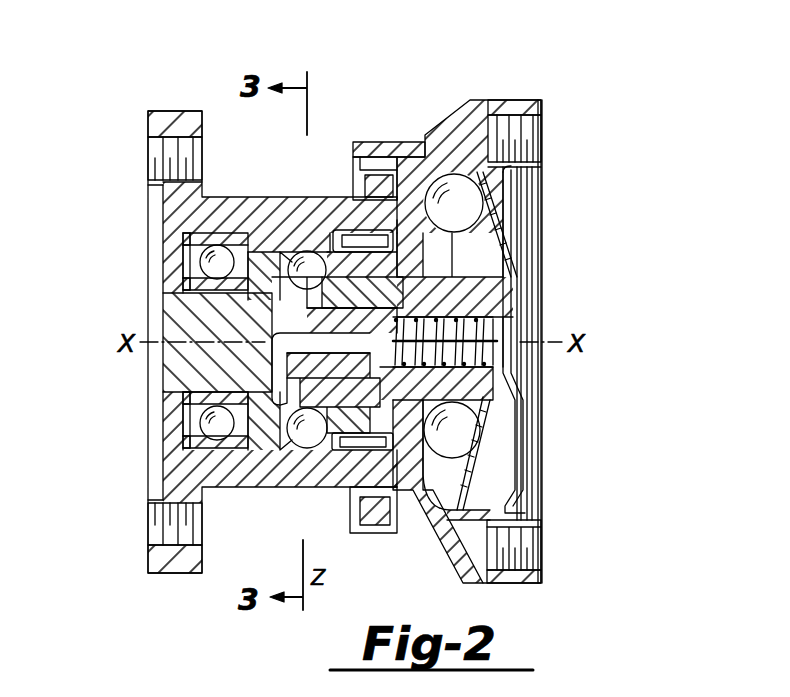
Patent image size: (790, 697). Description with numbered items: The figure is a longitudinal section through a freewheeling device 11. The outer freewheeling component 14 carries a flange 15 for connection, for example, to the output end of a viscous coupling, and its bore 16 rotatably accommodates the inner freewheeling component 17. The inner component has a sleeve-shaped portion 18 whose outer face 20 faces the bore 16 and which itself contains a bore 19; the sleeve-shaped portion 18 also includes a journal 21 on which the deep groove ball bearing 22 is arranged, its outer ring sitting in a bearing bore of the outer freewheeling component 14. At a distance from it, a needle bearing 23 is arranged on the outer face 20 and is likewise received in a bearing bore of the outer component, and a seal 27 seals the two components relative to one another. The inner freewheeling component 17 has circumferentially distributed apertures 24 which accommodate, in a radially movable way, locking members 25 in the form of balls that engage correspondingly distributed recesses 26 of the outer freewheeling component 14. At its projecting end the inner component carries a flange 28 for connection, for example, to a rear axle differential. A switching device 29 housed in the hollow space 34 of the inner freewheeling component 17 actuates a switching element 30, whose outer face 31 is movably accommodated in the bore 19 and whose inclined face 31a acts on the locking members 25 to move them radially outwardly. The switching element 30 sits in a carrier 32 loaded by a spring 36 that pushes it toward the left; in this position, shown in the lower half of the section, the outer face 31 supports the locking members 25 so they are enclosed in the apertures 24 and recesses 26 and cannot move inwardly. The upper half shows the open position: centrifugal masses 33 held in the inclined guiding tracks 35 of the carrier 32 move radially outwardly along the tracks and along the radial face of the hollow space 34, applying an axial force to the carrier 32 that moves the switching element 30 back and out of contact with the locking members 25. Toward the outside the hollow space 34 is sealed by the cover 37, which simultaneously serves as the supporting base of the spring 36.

The freewheeling device 11 is at (427, 101).
The outer freewheeling component 14 is at (210, 212).
The flange 15 is at (172, 130).
The bore 16 is at (245, 458).
The inner freewheeling component 17 is at (487, 100).
The sleeve-shaped portion 18 is at (393, 263).
The bore 19 is at (413, 527).
The outer face 20 is at (272, 262).
The journal 21 is at (195, 330).
The bearing 22 is at (183, 287).
The needle bearing 23 is at (363, 240).
The apertures 24 is at (312, 250).
The locking members 25 is at (183, 262).
The recesses 26 is at (290, 448).
The seal 27 is at (395, 145).
The flange 28 is at (517, 110).
The switching device 29 is at (524, 222).
The switching element 30 is at (372, 510).
The outer face 31 is at (312, 450).
The inclined face 31a is at (262, 455).
The carrier 32 is at (500, 293).
The centrifugal masses 33 is at (483, 198).
The hollow space 34 is at (478, 500).
The guiding tracks 35 is at (520, 256).
The spring 36 is at (510, 355).
The cover 37 is at (523, 413).